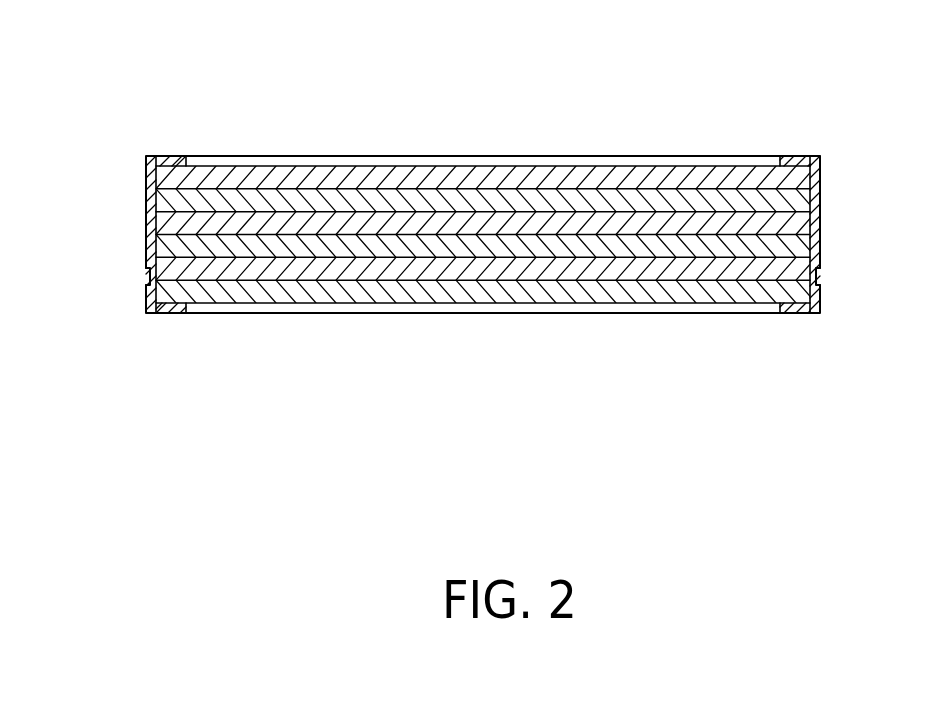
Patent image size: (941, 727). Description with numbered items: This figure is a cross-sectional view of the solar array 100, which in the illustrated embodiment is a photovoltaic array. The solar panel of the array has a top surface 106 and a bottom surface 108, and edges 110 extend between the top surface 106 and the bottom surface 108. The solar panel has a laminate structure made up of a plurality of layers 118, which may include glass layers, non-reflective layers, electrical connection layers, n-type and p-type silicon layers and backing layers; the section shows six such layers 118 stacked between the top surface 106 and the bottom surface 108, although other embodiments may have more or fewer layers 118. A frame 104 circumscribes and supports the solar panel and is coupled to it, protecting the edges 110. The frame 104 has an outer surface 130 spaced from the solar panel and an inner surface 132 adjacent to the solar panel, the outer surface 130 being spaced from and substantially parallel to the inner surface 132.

The solar array 100 is at (193, 98).
The frame 104 is at (147, 156).
The top surface 106 is at (527, 167).
The bottom surface 108 is at (493, 303).
The edges 110 is at (160, 241).
The layers 118 is at (168, 268).
The outer surface 130 is at (147, 300).
The inner surface 132 is at (160, 297).